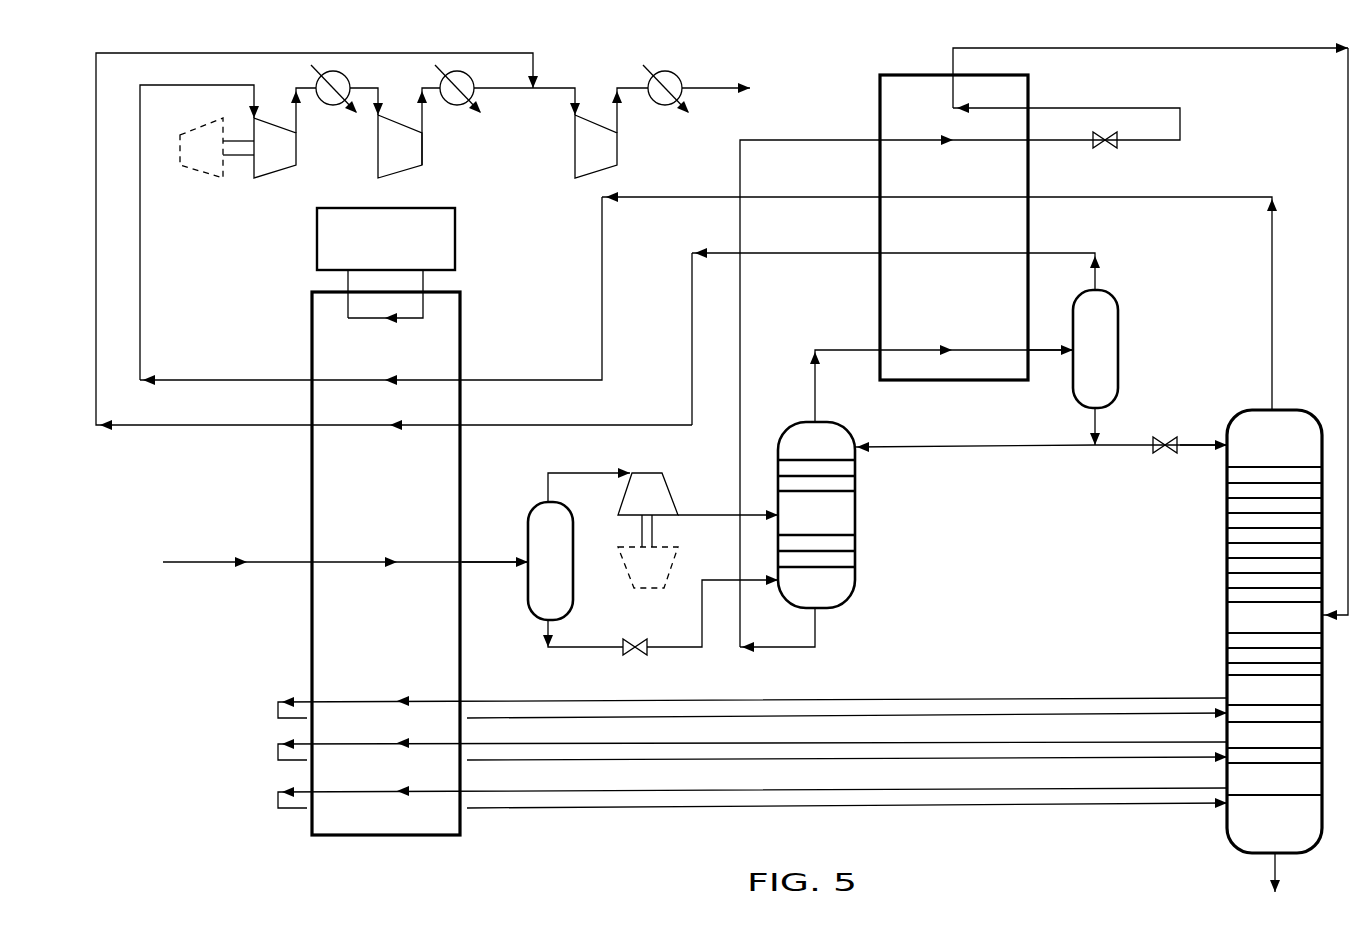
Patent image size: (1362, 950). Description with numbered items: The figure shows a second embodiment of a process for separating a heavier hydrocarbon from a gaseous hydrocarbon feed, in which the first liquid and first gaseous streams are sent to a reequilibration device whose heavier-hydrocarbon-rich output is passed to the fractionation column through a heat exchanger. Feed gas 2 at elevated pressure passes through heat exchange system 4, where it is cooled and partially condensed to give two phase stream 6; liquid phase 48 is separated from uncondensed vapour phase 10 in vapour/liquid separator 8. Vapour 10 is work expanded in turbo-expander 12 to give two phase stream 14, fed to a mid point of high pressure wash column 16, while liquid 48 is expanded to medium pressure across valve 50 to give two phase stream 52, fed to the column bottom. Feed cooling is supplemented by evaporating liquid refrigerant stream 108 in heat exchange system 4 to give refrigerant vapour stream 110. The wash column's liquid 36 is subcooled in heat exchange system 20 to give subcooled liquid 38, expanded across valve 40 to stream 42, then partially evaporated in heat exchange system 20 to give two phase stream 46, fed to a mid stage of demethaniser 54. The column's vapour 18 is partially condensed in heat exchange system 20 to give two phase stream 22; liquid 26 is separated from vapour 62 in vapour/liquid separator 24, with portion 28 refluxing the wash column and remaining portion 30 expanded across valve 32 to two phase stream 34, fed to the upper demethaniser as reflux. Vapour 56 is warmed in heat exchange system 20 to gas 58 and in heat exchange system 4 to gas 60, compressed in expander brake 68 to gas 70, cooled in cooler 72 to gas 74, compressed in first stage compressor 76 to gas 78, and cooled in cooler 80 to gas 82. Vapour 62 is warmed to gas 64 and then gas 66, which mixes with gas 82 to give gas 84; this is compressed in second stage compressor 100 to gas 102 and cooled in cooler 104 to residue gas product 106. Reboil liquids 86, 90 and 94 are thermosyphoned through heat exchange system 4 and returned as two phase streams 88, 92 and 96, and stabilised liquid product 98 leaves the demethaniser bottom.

The feed gas 2 is at (205, 566).
The heat exchange system 4 is at (390, 838).
The two phase stream 6 is at (486, 560).
The vapour/liquid separator 8 is at (528, 596).
The vapour phase 10 is at (548, 480).
The turbo-expander 12 is at (662, 498).
The two phase stream 14 is at (716, 520).
The high pressure wash column 16 is at (858, 519).
The vapour 18 is at (816, 392).
The heat exchange system 20 is at (880, 283).
The two phase stream 22 is at (1048, 356).
The vapour/liquid separator 24 is at (1120, 347).
The liquid 26 is at (1092, 432).
The liquid portion 28 is at (1003, 452).
The remaining liquid portion 30 is at (1128, 452).
The valve 32 is at (1163, 440).
The two phase stream 34 is at (1208, 440).
The liquid 36 is at (791, 651).
The subcooled liquid 38 is at (1065, 144).
The valve 40 is at (1100, 148).
The stream 42 is at (1148, 106).
The two phase stream 46 is at (1348, 105).
The liquid phase 48 is at (602, 648).
The valve 50 is at (633, 654).
The two phase stream 52 is at (716, 585).
The demethaniser 54 is at (1225, 622).
The vapour 56 is at (1274, 327).
The gas 58 is at (546, 374).
The gas 60 is at (238, 374).
The vapour 62 is at (1050, 258).
The gas 64 is at (658, 418).
The gas 66 is at (222, 432).
The expander brake 68 is at (252, 170).
The gas 70 is at (292, 116).
The cooler 72 is at (331, 106).
The gas 74 is at (365, 132).
The 1st stage compressor 76 is at (420, 118).
The gas 78 is at (424, 125).
The cooler 80 is at (455, 106).
The gas 82 is at (510, 92).
The gas 84 is at (550, 92).
The liquid 86 is at (1094, 698).
The two phase stream 88 is at (274, 714).
The liquid 90 is at (1008, 745).
The two phase stream 92 is at (274, 756).
The liquid 94 is at (964, 790).
The two phase stream 96 is at (274, 804).
The stabilised liquid product 98 is at (1272, 872).
The 2nd stage compressor 100 is at (572, 150).
The gas 102 is at (626, 92).
The cooler 104 is at (674, 74).
The residue gas product 106 is at (732, 92).
The liquid refrigerant stream 108 is at (425, 283).
The refrigerant vapour stream 110 is at (344, 282).